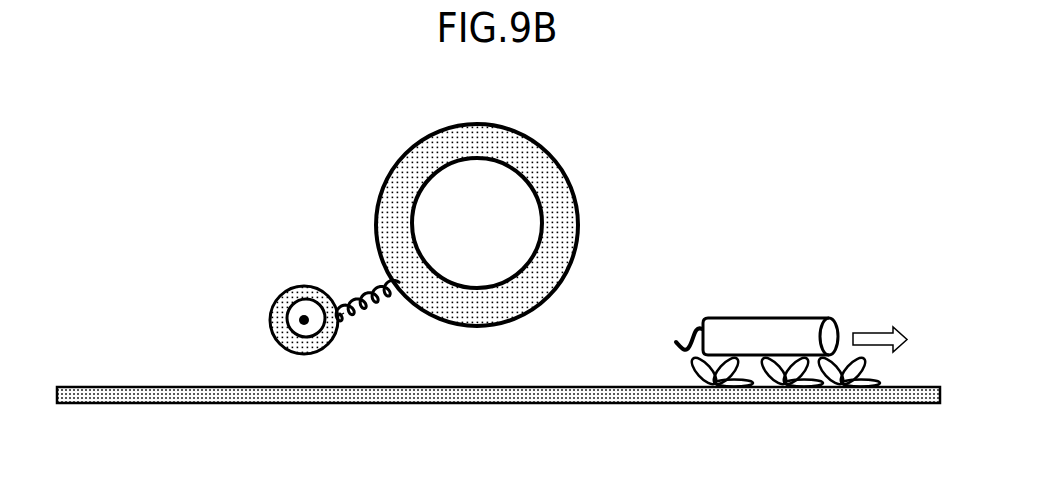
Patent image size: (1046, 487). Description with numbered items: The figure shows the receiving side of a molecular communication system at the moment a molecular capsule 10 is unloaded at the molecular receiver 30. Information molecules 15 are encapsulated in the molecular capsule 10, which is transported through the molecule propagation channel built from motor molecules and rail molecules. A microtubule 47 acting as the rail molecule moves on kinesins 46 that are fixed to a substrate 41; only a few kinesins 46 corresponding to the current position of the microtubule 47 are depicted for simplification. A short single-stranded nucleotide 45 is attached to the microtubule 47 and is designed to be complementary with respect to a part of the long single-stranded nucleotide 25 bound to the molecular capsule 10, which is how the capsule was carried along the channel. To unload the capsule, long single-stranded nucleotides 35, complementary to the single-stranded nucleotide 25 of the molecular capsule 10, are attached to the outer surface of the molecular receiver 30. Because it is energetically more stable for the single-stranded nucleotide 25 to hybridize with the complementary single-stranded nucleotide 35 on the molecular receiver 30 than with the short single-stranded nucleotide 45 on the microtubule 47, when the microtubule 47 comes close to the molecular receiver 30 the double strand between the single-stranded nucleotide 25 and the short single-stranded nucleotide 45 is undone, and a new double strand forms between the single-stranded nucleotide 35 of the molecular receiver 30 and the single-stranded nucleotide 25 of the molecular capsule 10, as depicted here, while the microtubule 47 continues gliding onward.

The molecular receiver 30 is at (560, 184).
The molecular capsule 10 is at (272, 322).
The information molecules 15 is at (295, 312).
The long single-stranded nucleotide 35 is at (352, 292).
The single-stranded nucleotide 25 is at (367, 314).
The microtubule 47 is at (793, 318).
The short single-stranded nucleotide 45 is at (698, 330).
The kinesins 46 is at (697, 362).
The substrate 41 is at (158, 397).